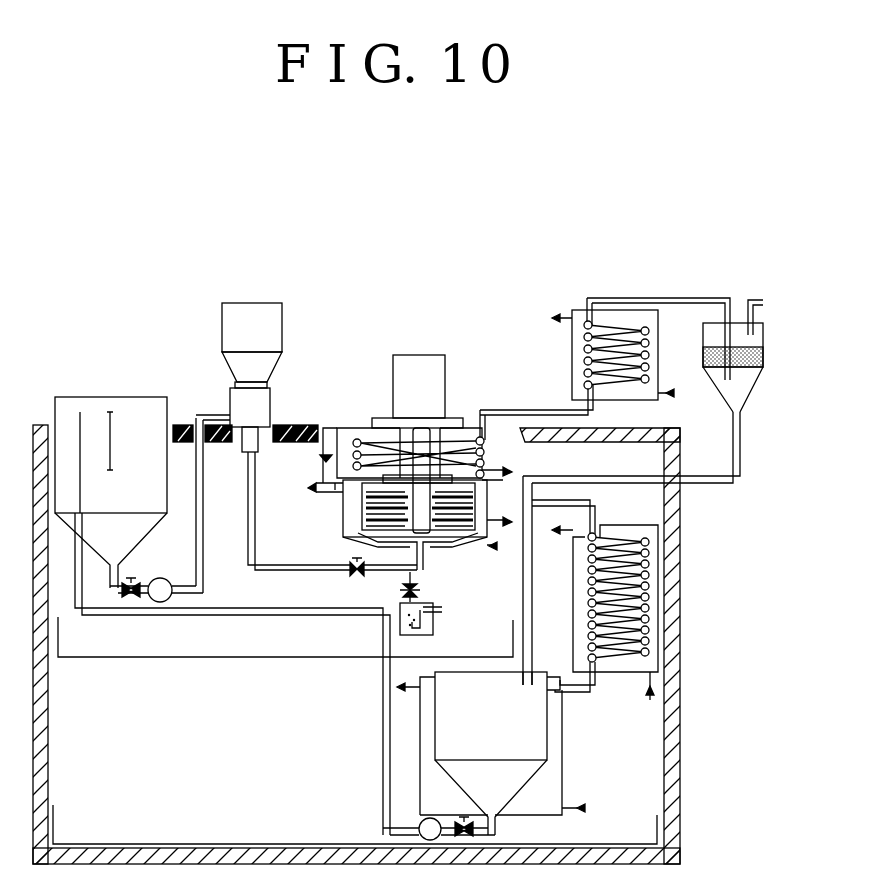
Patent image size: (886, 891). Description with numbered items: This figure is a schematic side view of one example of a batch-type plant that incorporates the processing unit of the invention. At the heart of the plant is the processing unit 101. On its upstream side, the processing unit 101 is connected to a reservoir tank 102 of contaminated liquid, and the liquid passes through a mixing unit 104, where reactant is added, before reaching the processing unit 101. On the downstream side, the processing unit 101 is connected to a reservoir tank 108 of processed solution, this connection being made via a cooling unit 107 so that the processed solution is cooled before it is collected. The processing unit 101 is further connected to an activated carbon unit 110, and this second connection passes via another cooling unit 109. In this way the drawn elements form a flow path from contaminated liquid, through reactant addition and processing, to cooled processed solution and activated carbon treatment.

The processing unit 101 is at (333, 483).
The reservoir tank of contaminated liquid 102 is at (129, 410).
The mixing unit 104 is at (247, 320).
The cooling unit 107 is at (645, 530).
The reservoir tank of processed solution 108 is at (525, 745).
The cooling unit 109 is at (578, 318).
The activated carbon unit 110 is at (737, 388).